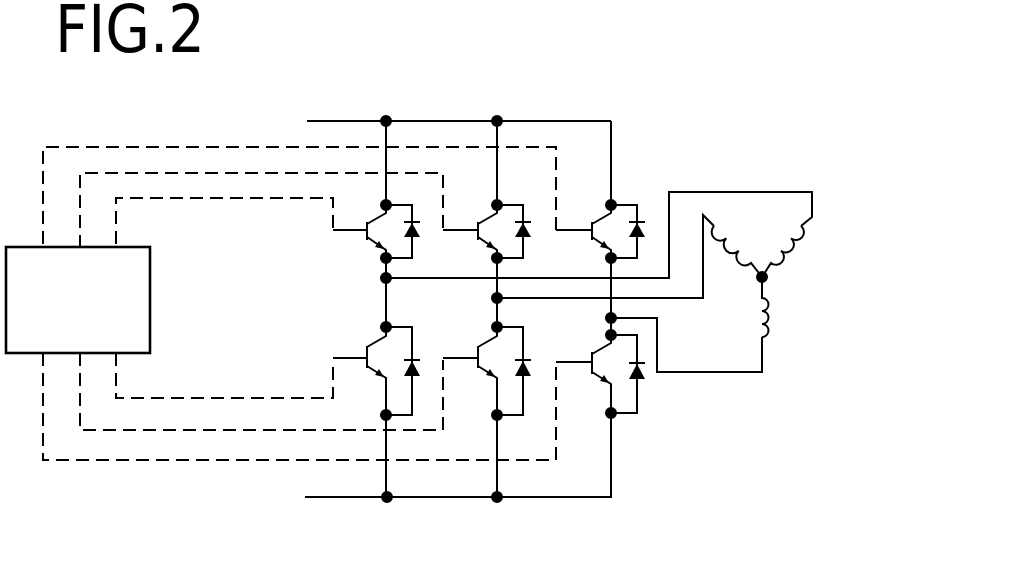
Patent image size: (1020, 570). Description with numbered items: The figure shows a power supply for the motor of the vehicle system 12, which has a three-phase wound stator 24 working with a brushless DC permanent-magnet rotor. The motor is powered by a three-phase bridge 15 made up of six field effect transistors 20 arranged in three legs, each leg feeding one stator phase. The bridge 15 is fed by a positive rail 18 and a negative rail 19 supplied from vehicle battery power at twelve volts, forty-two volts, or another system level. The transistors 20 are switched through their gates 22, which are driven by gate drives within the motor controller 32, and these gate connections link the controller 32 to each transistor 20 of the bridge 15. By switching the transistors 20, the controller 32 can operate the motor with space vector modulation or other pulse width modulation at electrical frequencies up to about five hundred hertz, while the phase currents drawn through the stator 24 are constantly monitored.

The motor drive system 12 is at (629, 202).
The three-phase 6-FET bridge 15 is at (334, 96).
The positive rail 18 is at (318, 120).
The negative rail 19 is at (360, 497).
The FETs 20 is at (608, 332).
The gates 22 is at (340, 372).
The 3-phase wound stator 24 is at (805, 222).
The motor controller 32 is at (150, 316).